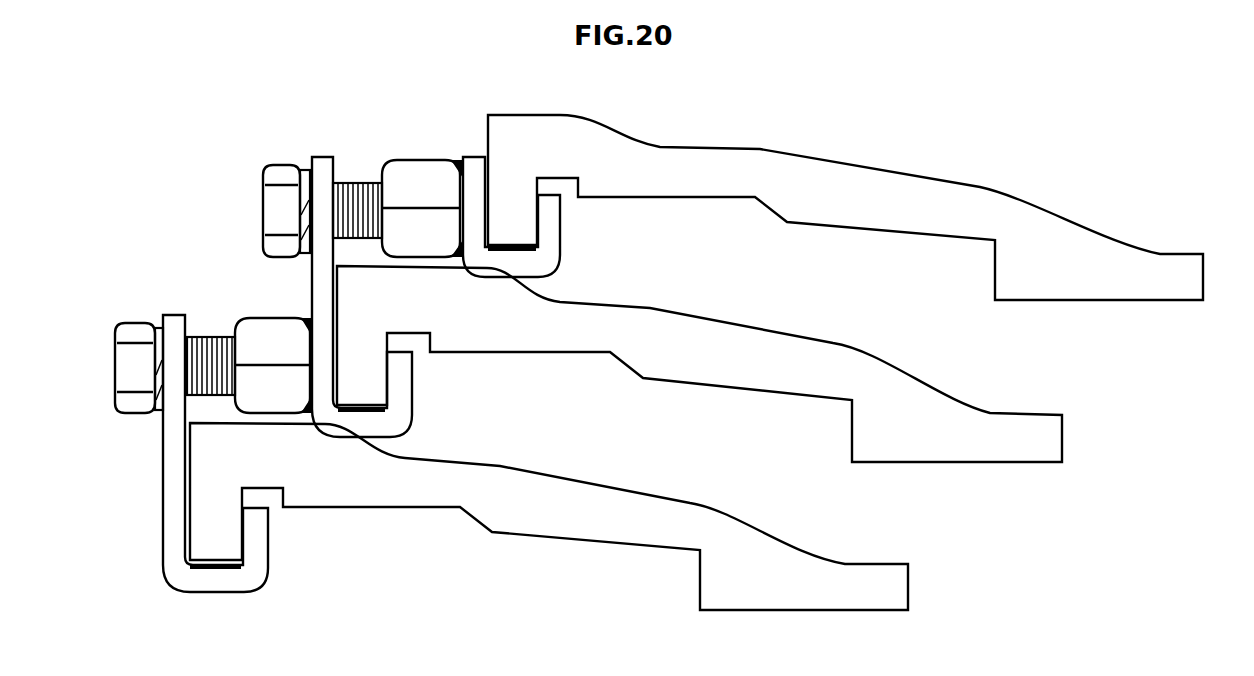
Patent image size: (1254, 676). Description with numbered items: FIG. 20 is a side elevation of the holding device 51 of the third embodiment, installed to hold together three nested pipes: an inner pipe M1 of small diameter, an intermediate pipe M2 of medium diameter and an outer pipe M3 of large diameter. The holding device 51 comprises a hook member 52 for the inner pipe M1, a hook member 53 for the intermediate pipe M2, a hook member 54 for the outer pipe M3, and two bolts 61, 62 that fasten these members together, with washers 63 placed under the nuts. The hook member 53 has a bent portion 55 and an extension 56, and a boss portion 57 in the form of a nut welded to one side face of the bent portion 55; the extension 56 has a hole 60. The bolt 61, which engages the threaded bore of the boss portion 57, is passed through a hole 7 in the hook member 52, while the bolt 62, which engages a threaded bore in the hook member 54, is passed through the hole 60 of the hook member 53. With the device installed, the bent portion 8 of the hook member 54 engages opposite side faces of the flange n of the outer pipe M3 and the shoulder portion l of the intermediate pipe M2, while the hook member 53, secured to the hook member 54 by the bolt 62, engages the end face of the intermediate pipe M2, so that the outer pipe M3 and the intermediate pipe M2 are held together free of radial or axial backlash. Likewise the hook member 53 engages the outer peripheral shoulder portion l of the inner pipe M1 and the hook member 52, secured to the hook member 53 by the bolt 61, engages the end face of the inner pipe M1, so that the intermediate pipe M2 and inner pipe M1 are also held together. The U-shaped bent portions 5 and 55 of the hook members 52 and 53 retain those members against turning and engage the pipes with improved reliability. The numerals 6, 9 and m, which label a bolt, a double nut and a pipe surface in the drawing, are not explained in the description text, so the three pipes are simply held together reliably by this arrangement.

The holding device 51 is at (211, 217).
The hook member for inner pipe 52 is at (168, 482).
The hook member for intermediate pipe 53 is at (309, 278).
The hook member for outer pipe 54 is at (466, 165).
The bent portion 55 is at (398, 415).
The extension 56 is at (322, 157).
The boss portion 57 is at (263, 335).
The hole 60 is at (324, 178).
The bolt 61 is at (127, 364).
The bolt 62 is at (278, 168).
The washers 63 is at (303, 172).
The U-shaped bent portion 5 is at (243, 583).
The bolt 6 is at (170, 315).
The hole 7 is at (190, 330).
The bent portion 8 is at (547, 262).
The double nut 9 is at (410, 177).
The rail surface m is at (828, 178).
The flange n is at (523, 213).
The shoulder portion l is at (494, 276).
The inner pipe M1 is at (828, 586).
The intermediate pipe M2 is at (980, 440).
The outer pipe M3 is at (1084, 262).